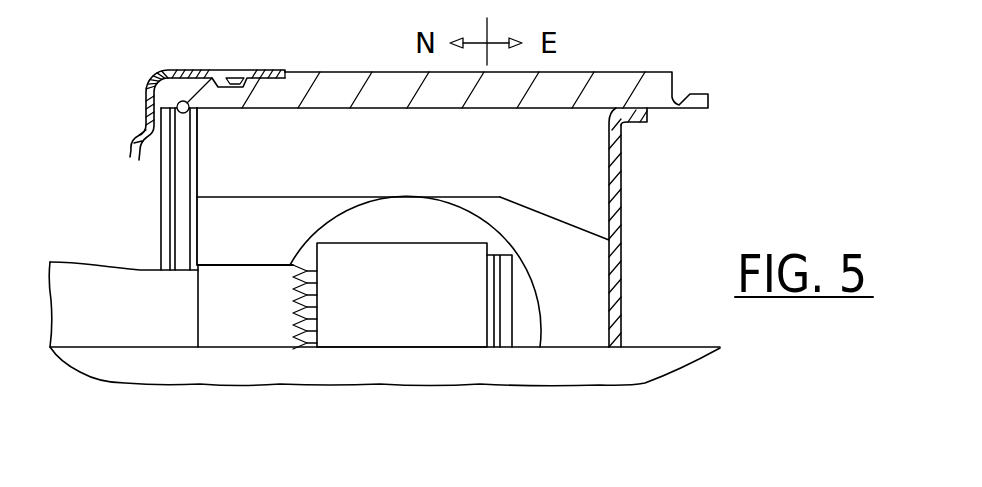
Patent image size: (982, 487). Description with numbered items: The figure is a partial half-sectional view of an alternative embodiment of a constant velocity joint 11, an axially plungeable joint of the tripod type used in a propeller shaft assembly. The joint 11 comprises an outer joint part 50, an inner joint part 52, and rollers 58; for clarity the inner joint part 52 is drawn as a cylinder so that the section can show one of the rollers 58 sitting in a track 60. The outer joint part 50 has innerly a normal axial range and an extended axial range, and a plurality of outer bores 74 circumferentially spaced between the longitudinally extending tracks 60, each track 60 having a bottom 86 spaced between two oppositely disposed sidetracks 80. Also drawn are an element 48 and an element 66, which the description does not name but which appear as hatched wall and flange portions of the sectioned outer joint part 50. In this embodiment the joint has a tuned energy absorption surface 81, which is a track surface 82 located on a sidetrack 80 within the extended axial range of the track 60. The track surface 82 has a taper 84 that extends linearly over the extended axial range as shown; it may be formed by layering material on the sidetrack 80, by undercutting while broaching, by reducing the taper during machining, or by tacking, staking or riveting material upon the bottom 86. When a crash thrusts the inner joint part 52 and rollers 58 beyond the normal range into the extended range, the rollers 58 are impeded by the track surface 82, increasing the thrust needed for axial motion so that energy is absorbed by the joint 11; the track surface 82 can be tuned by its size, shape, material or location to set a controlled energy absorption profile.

The constant velocity joint 11 is at (163, 397).
The side wall 48 is at (613, 188).
The outer joint part 50 is at (333, 82).
The inner joint part 52 is at (426, 310).
The roller 58 is at (407, 210).
The track 60 is at (228, 217).
The flange 66 is at (610, 123).
The outer bore 74 is at (383, 120).
The sidetrack 80 is at (312, 195).
The tuned energy absorption surface 81 is at (626, 285).
The track surface 82 is at (581, 232).
The taper 84 is at (560, 218).
The bottom 86 is at (279, 230).